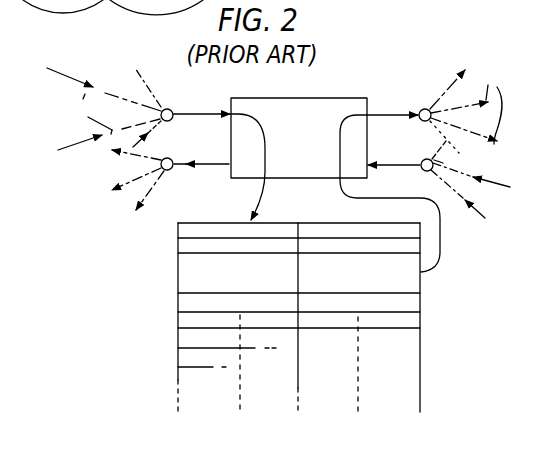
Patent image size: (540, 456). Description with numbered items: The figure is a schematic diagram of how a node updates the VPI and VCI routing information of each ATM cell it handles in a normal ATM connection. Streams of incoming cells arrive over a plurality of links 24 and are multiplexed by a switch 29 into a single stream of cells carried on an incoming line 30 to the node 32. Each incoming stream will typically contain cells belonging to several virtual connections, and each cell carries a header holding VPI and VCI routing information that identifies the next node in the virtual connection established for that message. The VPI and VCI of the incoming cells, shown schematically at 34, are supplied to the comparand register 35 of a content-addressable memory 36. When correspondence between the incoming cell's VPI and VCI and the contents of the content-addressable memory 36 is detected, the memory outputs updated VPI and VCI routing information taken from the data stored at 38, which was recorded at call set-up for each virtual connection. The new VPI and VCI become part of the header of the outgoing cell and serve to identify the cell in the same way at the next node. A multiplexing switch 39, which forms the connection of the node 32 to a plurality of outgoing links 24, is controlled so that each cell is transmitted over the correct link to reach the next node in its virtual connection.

The links 24 is at (103, 92).
The switch 29 is at (172, 120).
The incoming line 30 is at (197, 112).
The node 32 is at (304, 139).
The VPI and VCI of the incoming cells 34 is at (178, 274).
The comparand register 35 is at (206, 222).
The content-addressable memory 36 is at (177, 333).
The data stored at call set-up 38 is at (298, 317).
The multiplexing switch 39 is at (171, 170).